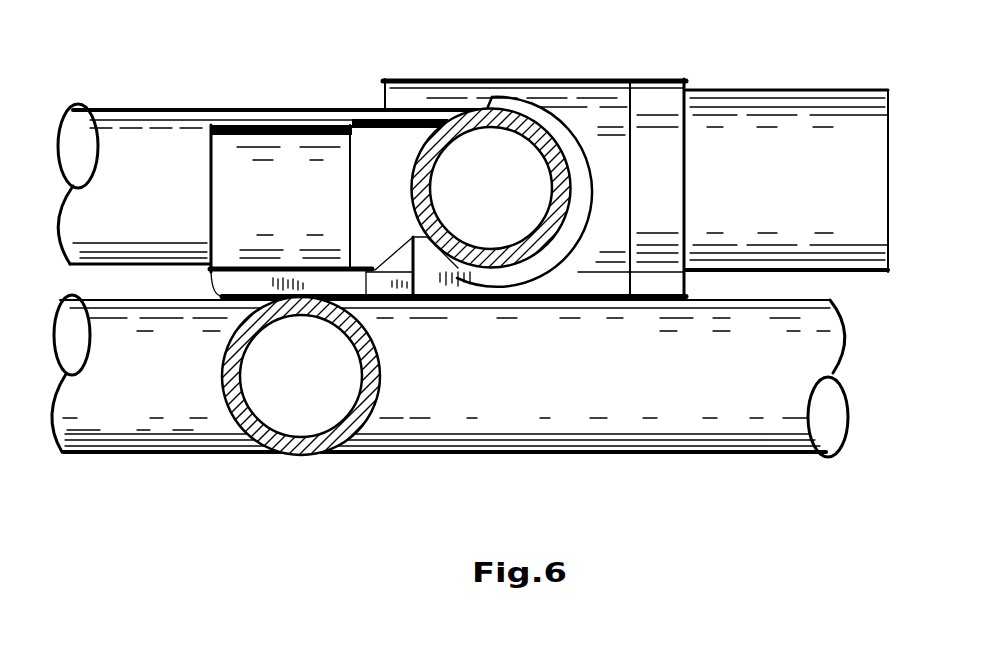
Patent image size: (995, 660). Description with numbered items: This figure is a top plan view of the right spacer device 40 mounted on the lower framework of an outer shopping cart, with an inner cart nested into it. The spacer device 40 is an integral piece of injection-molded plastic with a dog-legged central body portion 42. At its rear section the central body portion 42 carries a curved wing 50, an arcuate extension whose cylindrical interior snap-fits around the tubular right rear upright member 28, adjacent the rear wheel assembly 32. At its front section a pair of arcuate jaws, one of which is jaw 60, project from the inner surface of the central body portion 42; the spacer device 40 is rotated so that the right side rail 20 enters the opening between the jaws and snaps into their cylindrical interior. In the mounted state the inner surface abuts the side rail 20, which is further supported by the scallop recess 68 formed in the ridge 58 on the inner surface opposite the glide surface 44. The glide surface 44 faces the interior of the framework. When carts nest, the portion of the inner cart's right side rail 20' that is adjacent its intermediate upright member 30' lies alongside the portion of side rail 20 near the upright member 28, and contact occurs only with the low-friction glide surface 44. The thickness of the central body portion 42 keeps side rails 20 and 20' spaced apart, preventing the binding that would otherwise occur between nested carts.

The right side rail 20 is at (274, 155).
The right side rail of inner cart 20' is at (450, 402).
The right rear upright member 28 is at (427, 137).
The right intermediate upright member of inner cart 30' is at (301, 402).
The rear wheel assembly 32 is at (710, 105).
The right spacer device 40 is at (487, 285).
The central body portion 42 is at (368, 302).
The glide surface 44 is at (237, 303).
The curved wing 50 is at (578, 186).
The ridge 58 is at (413, 237).
The arcuate jaw 60 is at (230, 140).
The scallop recess 68 is at (402, 246).